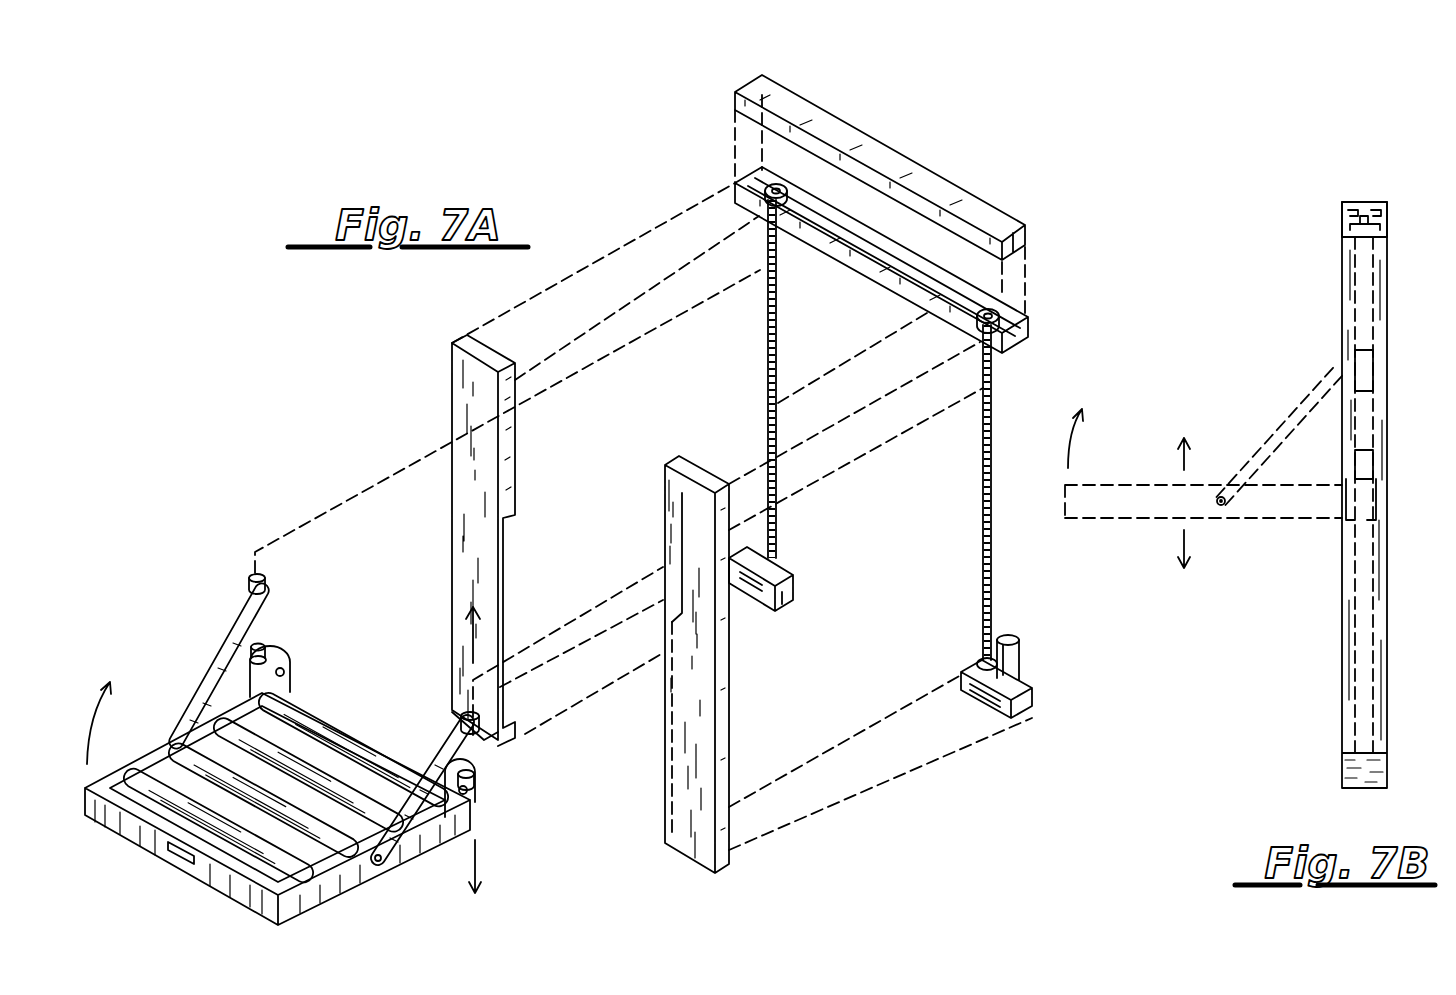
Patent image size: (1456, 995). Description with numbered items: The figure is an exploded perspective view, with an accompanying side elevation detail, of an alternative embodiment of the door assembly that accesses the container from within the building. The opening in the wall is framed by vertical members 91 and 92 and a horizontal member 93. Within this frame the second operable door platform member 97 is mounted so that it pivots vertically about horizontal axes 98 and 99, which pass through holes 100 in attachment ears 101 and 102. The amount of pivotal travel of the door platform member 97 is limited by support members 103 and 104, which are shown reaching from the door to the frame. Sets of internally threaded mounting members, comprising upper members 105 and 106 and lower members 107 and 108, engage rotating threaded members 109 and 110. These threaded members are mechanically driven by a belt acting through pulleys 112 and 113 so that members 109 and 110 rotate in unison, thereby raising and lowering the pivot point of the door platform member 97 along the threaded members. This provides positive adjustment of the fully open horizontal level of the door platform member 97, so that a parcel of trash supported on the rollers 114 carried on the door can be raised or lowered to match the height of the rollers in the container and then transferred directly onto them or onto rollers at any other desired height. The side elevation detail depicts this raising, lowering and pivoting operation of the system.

In FIG. 7A, the vertical member 91 is at (690, 510).
In FIG. 7B, the vertical member 91 is at (1388, 730).
In FIG. 7A, the vertical member 92 is at (470, 397).
In FIG. 7A, the horizontal member 93 is at (912, 172).
In FIG. 7B, the horizontal member 93 is at (1358, 200).
In FIG. 7A, the door platform member 97 is at (225, 883).
In FIG. 7B, the door platform member 97 is at (1120, 520).
In FIG. 7A, the horizontal axis 98 is at (463, 794).
In FIG. 7A, the horizontal axis 99 is at (250, 660).
In FIG. 7A, the hole 100 is at (282, 668).
In FIG. 7B, the hole 100 is at (1295, 415).
In FIG. 7A, the attachment ear 101 is at (473, 760).
In FIG. 7A, the attachment ear 102 is at (292, 672).
In FIG. 7A, the support member 103 is at (390, 843).
In FIG. 7A, the support member 104 is at (190, 702).
In FIG. 7A, the upper internally threaded mounting member 105 is at (484, 735).
In FIG. 7B, the upper internally threaded mounting member 105 is at (1374, 372).
In FIG. 7A, the upper internally threaded mounting member 106 is at (250, 583).
In FIG. 7A, the lower internally threaded mounting member 107 is at (478, 790).
In FIG. 7B, the lower internally threaded mounting member 107 is at (1374, 462).
In FIG. 7A, the lower internally threaded mounting member 108 is at (265, 652).
In FIG. 7A, the rotating threaded member 109 is at (982, 500).
In FIG. 7B, the rotating threaded member 109 is at (1375, 650).
In FIG. 7A, the rotating threaded member 110 is at (768, 380).
In FIG. 7A, the pulley 112 is at (1005, 318).
In FIG. 7B, the pulley 112 is at (1377, 197).
In FIG. 7A, the pulley 113 is at (768, 186).
In FIG. 7A, the rollers 114 is at (171, 812).